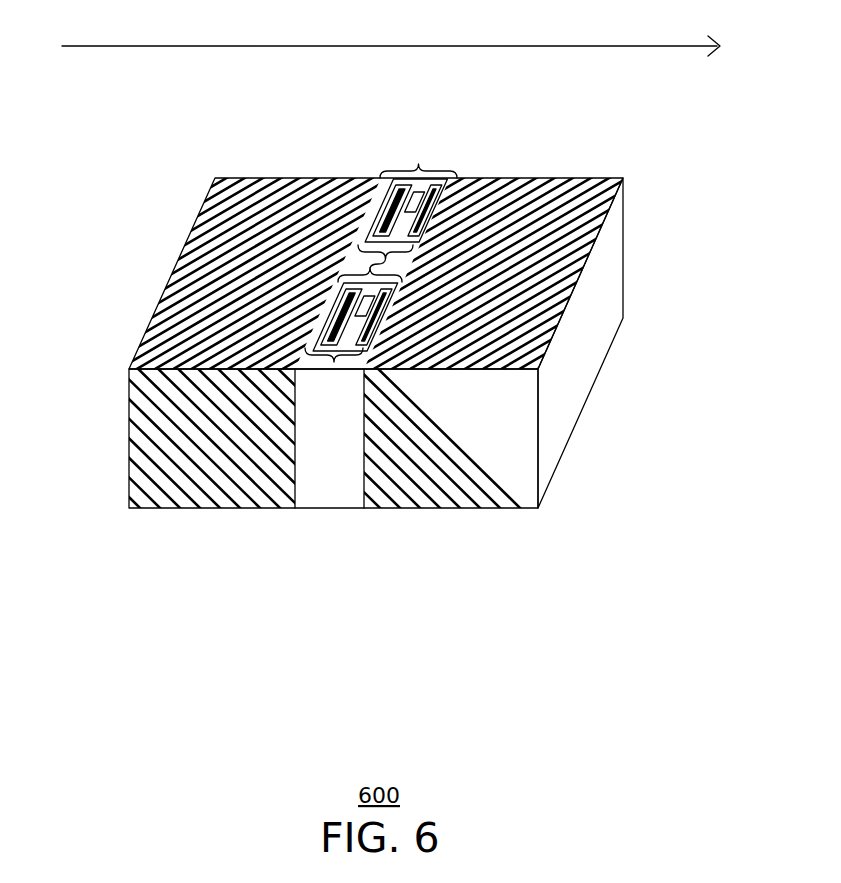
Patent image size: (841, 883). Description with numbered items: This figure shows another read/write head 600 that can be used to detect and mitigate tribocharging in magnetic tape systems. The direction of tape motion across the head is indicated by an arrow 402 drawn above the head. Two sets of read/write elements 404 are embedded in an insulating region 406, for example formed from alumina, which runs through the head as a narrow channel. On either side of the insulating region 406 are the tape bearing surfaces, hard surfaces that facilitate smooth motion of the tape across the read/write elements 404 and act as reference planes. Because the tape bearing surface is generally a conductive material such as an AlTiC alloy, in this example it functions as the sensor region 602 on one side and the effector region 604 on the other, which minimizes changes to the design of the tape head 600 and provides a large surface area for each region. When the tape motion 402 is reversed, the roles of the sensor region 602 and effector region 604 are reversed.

The arrow indicating tape motion 402 is at (328, 45).
The read/write elements 404 is at (418, 164).
The insulating region 406 is at (332, 508).
The read/write head 600 is at (335, 312).
The sensor region 602 is at (572, 178).
The effector region 604 is at (295, 178).